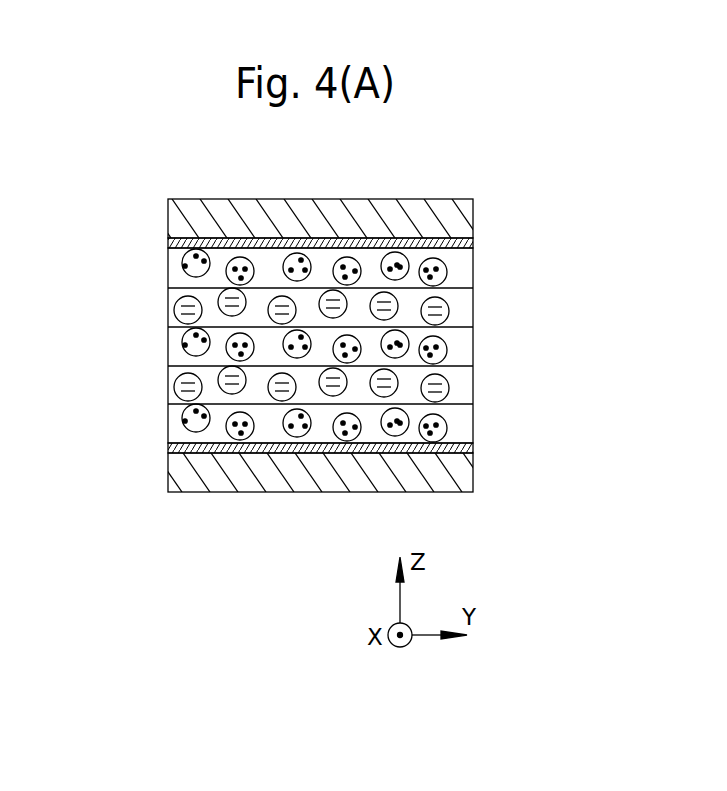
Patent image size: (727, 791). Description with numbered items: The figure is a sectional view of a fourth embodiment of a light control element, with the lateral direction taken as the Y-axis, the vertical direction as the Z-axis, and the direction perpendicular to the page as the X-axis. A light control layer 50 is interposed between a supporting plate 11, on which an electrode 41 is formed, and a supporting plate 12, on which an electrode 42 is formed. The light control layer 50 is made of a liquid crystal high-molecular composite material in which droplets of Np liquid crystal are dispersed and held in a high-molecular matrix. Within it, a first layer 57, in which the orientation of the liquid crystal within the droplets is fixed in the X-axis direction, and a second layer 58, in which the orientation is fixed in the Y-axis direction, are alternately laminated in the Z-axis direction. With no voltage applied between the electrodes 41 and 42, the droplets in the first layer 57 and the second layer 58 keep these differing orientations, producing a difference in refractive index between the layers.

The supporting plate 11 is at (170, 228).
The supporting plate 12 is at (170, 463).
The electrode 41 is at (473, 243).
The electrode 42 is at (473, 447).
The light control layer 50 is at (309, 342).
The first layer 57 is at (466, 350).
The second layer 58 is at (468, 310).